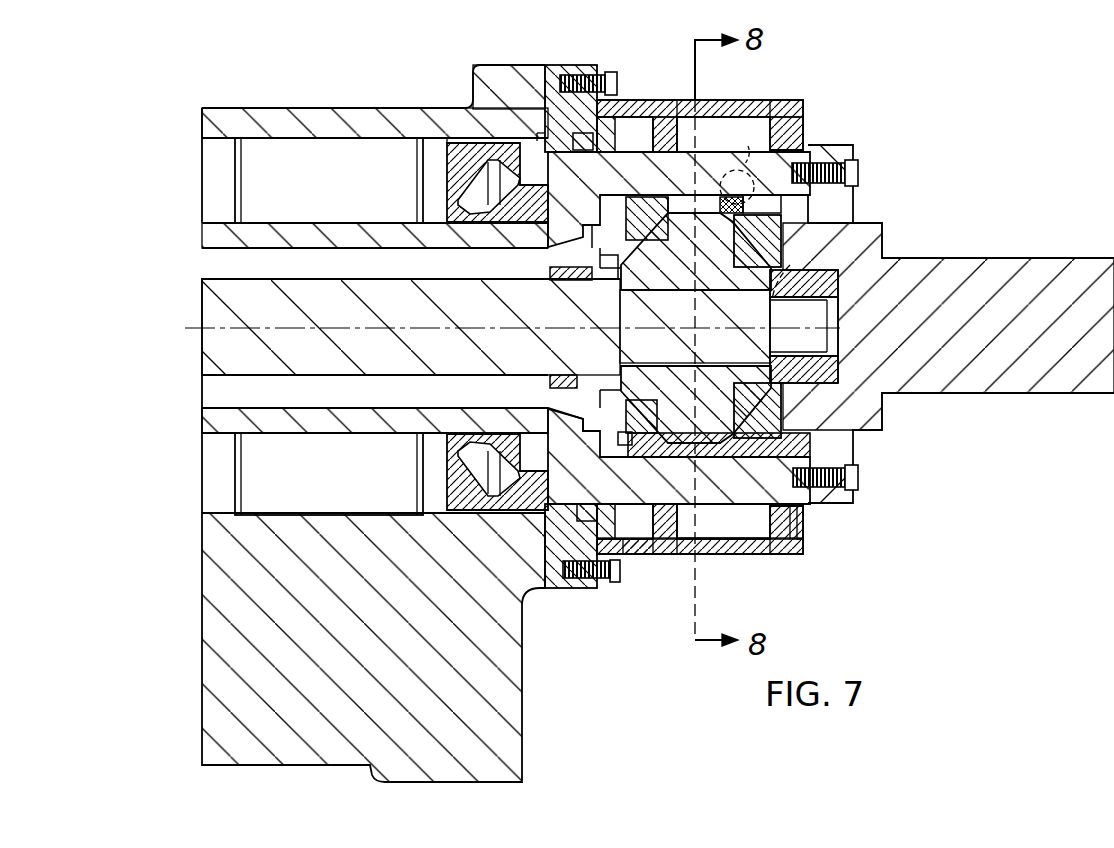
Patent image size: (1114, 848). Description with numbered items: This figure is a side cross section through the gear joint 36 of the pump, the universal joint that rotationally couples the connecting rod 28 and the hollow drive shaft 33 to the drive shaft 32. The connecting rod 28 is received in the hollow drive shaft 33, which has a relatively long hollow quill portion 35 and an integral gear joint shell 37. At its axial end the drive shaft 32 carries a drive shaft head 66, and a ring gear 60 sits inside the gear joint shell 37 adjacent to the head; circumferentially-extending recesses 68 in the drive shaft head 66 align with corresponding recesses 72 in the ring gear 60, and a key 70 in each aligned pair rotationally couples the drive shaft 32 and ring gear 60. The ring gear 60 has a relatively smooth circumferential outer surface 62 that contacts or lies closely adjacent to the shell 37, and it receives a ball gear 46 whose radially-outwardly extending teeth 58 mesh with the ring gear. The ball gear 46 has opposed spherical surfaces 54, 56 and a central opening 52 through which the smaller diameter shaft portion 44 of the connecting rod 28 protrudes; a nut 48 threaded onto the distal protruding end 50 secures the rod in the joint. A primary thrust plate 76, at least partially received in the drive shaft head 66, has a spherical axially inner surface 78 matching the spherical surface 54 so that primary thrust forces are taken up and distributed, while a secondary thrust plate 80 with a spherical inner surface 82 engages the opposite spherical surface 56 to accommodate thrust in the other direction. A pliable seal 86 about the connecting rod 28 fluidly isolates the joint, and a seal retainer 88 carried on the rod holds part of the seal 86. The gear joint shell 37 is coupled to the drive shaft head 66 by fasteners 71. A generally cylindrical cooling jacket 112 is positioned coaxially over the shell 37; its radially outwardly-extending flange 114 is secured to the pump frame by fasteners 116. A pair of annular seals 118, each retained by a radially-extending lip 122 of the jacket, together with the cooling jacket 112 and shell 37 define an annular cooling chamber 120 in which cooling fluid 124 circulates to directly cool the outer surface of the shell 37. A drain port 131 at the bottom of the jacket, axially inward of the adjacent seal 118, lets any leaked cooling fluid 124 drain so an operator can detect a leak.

The connecting rod 28 is at (205, 310).
The drive shaft 32 is at (1010, 262).
The hollow drive shaft 33 is at (280, 228).
The quill portion 35 is at (383, 228).
The gear joint 36 is at (797, 243).
The gear joint shell 37 is at (775, 492).
The shaft portion 44 is at (666, 320).
The ball gear 46 is at (785, 414).
The nut 48 is at (825, 362).
The distal/protruding end 50 is at (820, 292).
The central opening 52 is at (796, 272).
The spherical surface 54 is at (748, 408).
The spherical surface 56 is at (643, 410).
The teeth 58 is at (650, 212).
The ring gear 60 is at (673, 215).
The circumferential outer surface 62 is at (712, 465).
The drive shaft head 66 is at (808, 202).
The circumferentially-extending recesses 68 is at (757, 205).
The key 70 is at (728, 205).
The fasteners 71 is at (862, 480).
The circumferentially-extending recesses 72 is at (739, 144).
The primary thrust plate 76 is at (783, 240).
The axially inner surface 78 is at (725, 248).
The secondary thrust plate 80 is at (628, 443).
The spherical inner surface 82 is at (637, 247).
The pliable seal 86 is at (604, 256).
The seal retainer 88 is at (558, 278).
The cooling jacket 112 is at (748, 104).
The flange 114 is at (610, 72).
The fasteners 116 is at (583, 75).
The annular seals 118 is at (790, 520).
The cooling chamber 120 is at (712, 127).
The lips 122 is at (665, 117).
The cooling fluid 124 is at (760, 545).
The drain port 131 is at (620, 530).